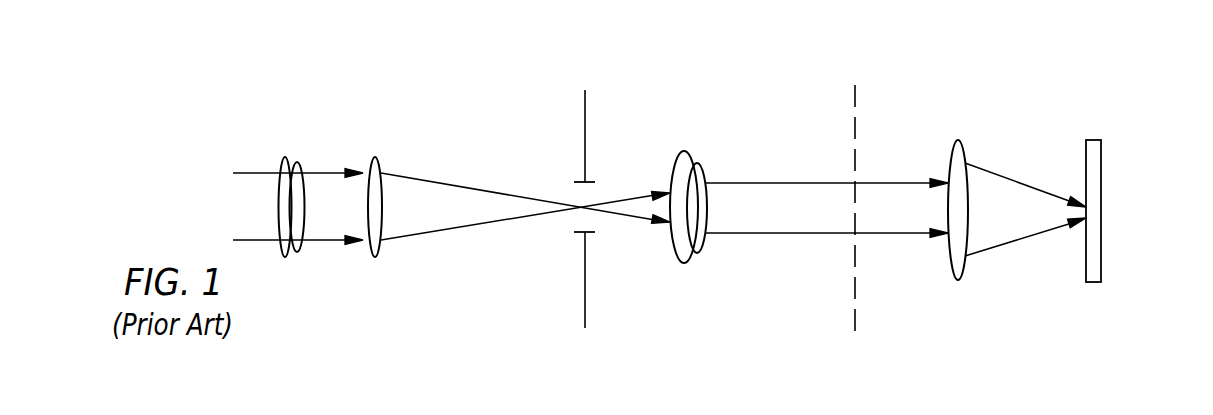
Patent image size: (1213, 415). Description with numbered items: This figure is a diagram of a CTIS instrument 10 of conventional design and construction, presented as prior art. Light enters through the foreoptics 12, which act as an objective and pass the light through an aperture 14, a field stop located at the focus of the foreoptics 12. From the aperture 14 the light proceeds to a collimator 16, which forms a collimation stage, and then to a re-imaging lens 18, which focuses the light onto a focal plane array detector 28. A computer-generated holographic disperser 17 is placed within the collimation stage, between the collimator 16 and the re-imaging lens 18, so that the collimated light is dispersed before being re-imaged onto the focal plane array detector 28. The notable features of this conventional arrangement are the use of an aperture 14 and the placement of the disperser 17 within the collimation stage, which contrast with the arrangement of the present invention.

The CTIS instrument 10 is at (221, 122).
The foreoptics 12 is at (320, 160).
The aperture 14 is at (584, 110).
The collimator 16 is at (684, 154).
The computer-generated holographic (CGH) disperser 17 is at (853, 108).
The re-imaging lens 18 is at (957, 142).
The focal plane array (FPA) detector 28 is at (1092, 140).